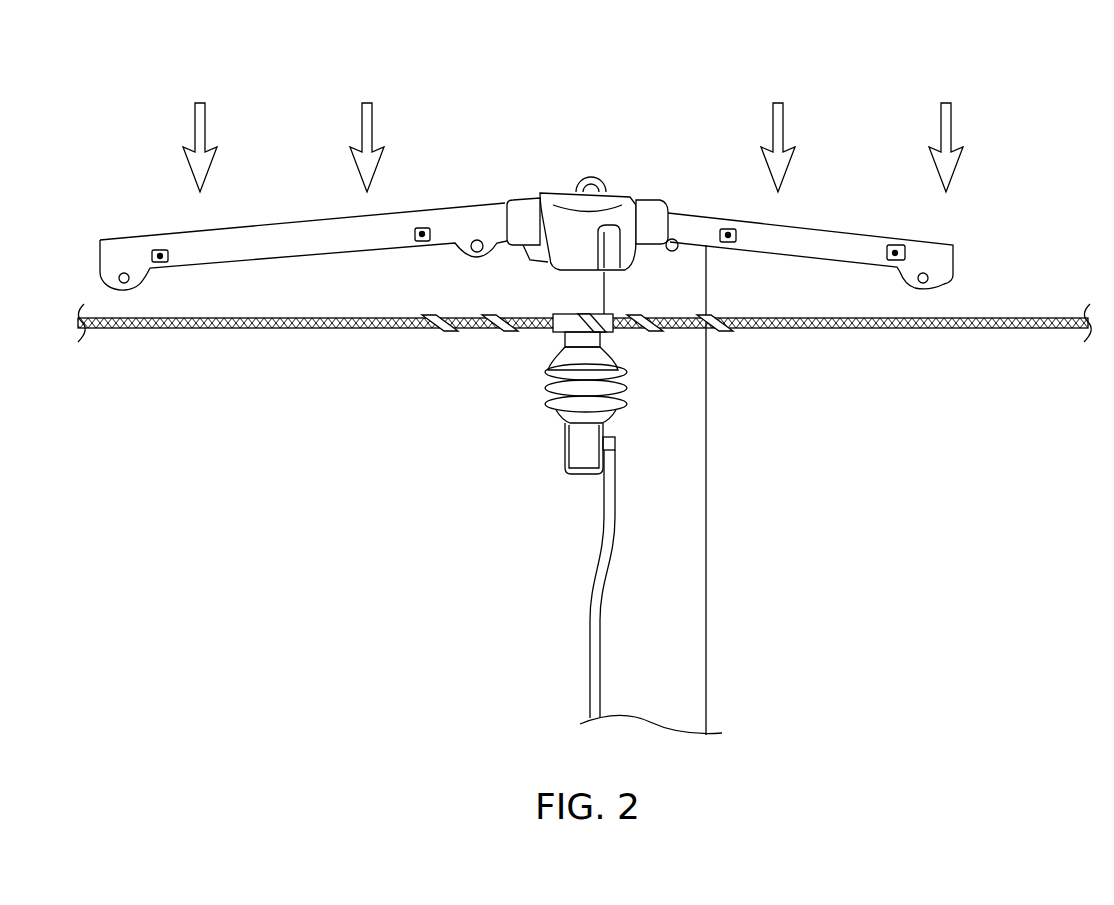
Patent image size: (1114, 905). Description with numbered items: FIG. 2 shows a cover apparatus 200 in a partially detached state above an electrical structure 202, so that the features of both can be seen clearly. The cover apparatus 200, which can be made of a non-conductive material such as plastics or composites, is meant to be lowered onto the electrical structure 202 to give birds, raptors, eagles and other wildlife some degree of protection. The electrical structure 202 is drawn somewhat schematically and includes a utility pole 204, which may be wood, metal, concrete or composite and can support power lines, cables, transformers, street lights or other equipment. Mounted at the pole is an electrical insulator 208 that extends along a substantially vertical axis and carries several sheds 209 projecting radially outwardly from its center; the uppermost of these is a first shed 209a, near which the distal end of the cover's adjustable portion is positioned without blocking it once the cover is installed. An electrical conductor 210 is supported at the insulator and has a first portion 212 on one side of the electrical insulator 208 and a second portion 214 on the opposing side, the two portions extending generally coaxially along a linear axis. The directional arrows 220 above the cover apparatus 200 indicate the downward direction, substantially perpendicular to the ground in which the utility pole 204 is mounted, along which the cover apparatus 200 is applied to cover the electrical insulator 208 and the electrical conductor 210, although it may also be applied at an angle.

The cover apparatus 200 is at (137, 83).
The electrical structure 202 is at (303, 452).
The utility pole 204 is at (706, 470).
The electrical insulator 208 is at (550, 352).
The sheds 209 is at (592, 397).
The first shed 209a is at (624, 372).
The electrical conductor 210 is at (112, 330).
The first portion 212 is at (435, 333).
The second portion 214 is at (957, 330).
The directional arrows 220 is at (208, 123).